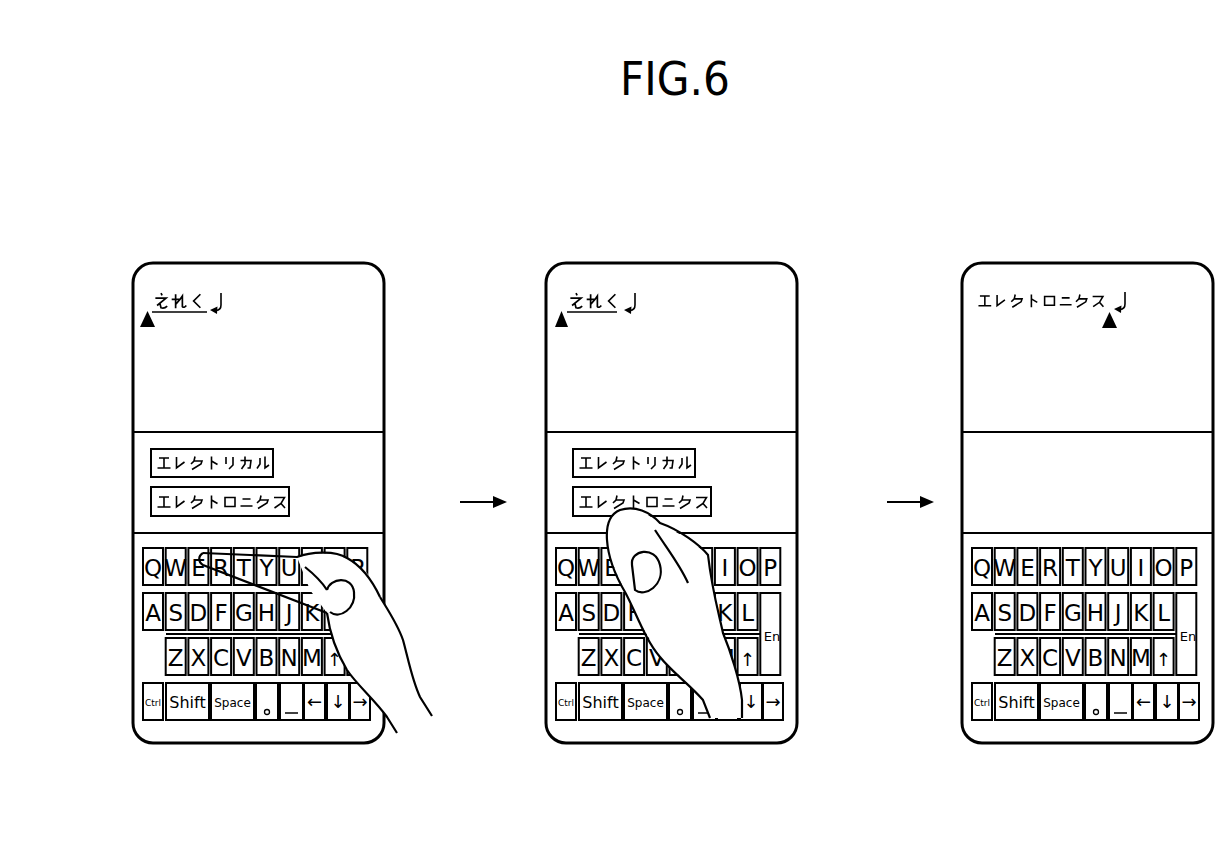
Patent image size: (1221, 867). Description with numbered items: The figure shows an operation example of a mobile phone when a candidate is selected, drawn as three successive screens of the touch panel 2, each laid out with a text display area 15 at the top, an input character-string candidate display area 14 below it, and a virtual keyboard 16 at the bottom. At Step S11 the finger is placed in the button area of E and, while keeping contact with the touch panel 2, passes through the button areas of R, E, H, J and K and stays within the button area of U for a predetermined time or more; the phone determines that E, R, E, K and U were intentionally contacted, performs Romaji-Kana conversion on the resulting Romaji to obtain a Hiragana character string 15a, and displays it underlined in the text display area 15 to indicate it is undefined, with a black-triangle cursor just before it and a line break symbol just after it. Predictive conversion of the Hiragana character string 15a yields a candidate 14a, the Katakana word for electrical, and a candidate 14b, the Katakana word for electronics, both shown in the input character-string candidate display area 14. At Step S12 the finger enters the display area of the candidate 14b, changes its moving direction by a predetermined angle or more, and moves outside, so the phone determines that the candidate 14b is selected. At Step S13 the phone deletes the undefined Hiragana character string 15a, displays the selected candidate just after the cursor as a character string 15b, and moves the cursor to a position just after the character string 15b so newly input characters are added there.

The touch panel 2 is at (385, 300).
The input character-string candidate display area 14 is at (148, 462).
The candidate 14a is at (274, 463).
The candidate 14b is at (290, 500).
The text display area 15 is at (146, 337).
The Hiragana character string 15a is at (183, 288).
The character string 15b is at (1064, 288).
The virtual keyboard 16 is at (148, 652).
The Step S11 is at (254, 463).
The Step S12 is at (734, 242).
The Step S13 is at (1087, 463).